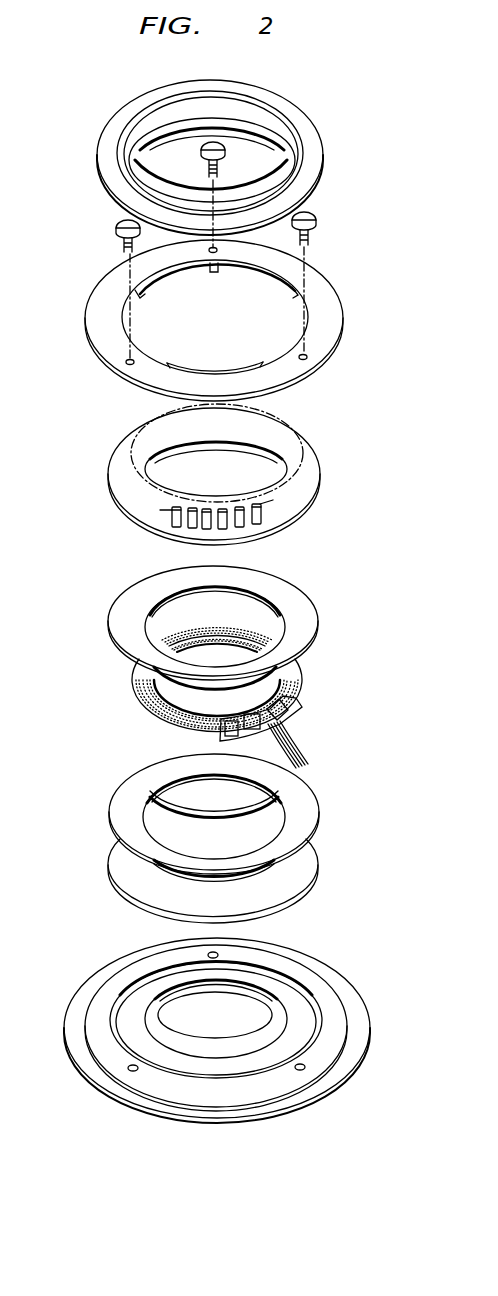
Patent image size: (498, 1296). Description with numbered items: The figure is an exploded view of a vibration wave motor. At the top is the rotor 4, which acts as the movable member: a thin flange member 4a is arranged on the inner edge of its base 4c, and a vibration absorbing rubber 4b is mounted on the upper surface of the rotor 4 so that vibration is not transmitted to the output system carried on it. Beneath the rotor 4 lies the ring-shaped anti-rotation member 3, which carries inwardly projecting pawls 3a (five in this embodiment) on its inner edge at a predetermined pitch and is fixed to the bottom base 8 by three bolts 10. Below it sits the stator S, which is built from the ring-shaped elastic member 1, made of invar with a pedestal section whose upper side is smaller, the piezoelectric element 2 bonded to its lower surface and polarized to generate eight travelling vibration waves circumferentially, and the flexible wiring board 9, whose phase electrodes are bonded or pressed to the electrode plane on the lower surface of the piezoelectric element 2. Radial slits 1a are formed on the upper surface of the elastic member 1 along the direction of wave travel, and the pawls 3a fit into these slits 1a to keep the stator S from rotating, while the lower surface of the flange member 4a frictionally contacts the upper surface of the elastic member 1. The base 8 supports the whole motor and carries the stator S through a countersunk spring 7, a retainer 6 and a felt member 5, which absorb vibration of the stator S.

The ring-shaped elastic member 1 is at (238, 486).
The radial slits 1a is at (263, 512).
The piezoelectric element 2 is at (232, 627).
The anti-rotation member 3 is at (223, 320).
The inwardly projecting pawls 3a is at (218, 270).
The rotor 4 is at (254, 157).
The thin flange member 4a is at (290, 137).
The vibration absorbing rubber 4b is at (318, 149).
The base of the rotor 4c is at (324, 176).
The felt member 5 is at (304, 673).
The retainer 6 is at (308, 800).
The countersunk spring 7 is at (308, 860).
The bottom base 8 is at (332, 974).
The flexible wiring board 9 is at (301, 708).
The bolts 10 is at (200, 148).
The stator S is at (257, 546).